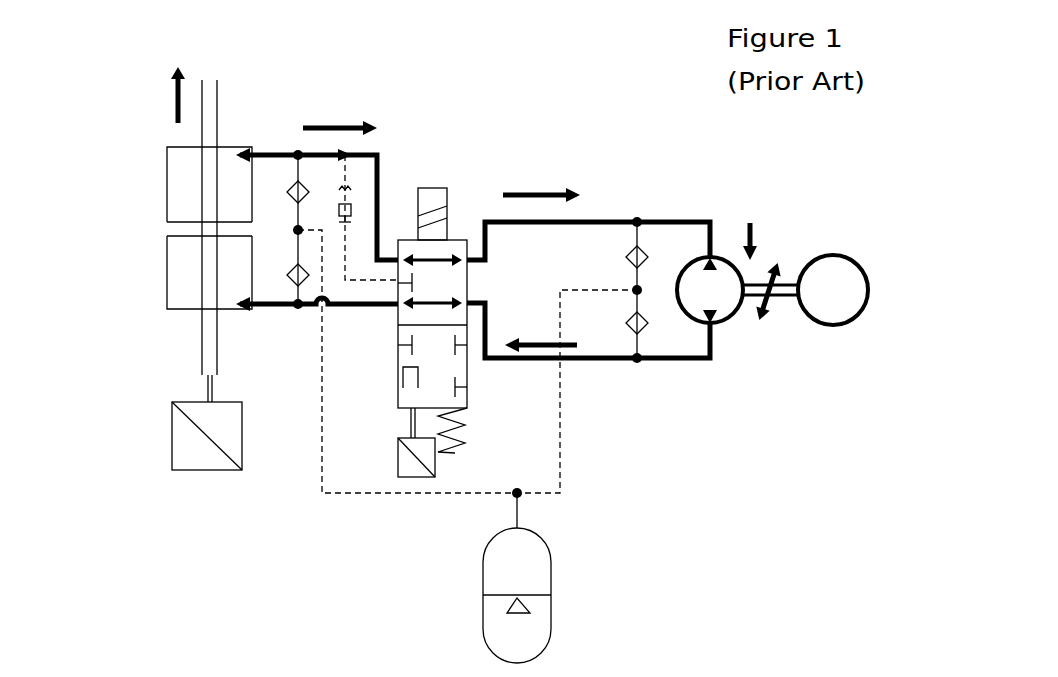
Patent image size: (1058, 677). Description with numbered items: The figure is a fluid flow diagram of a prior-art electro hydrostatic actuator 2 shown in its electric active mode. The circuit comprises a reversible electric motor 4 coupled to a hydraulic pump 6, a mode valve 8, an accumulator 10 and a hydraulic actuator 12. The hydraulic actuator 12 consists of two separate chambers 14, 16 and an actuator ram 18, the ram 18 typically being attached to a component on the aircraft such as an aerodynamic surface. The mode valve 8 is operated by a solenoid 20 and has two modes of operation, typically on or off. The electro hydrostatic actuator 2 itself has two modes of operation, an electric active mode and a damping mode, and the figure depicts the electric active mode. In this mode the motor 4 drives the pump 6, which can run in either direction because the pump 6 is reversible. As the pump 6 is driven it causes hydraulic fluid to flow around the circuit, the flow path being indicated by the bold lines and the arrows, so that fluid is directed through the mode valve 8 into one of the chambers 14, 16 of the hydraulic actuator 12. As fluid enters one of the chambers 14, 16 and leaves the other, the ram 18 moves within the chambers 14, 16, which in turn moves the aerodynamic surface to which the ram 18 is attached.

The electro hydrostatic actuator 2 is at (603, 190).
The reversible electric motor 4 is at (832, 268).
The hydraulic pump 6 is at (715, 297).
The mode valve 8 is at (438, 248).
The accumulator 10 is at (527, 567).
The hydraulic actuator 12 is at (157, 240).
The chamber 14 is at (190, 185).
The chamber 16 is at (192, 280).
The actuator ram 18 is at (203, 132).
The solenoid 20 is at (427, 197).